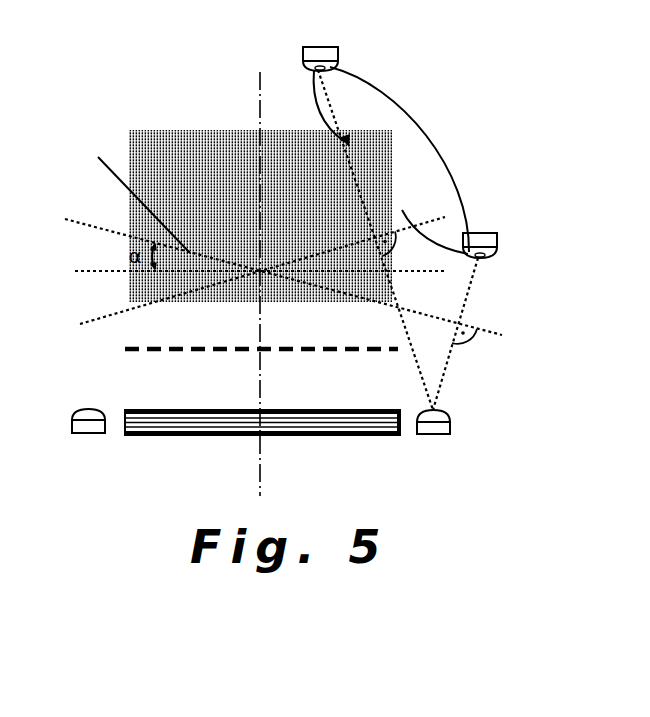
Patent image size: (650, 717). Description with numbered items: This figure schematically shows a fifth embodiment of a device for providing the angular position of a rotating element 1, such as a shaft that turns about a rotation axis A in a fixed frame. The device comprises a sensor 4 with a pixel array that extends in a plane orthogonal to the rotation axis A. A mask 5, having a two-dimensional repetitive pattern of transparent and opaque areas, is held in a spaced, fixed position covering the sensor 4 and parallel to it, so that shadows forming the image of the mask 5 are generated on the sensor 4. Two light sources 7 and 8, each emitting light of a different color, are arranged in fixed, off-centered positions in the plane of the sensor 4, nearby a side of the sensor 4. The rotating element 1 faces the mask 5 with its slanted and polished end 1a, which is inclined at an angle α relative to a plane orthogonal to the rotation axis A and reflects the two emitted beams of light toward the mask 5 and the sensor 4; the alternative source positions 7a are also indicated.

The rotating element 1 is at (178, 133).
The slanted and polished end 1a is at (128, 200).
The sensor 4 is at (312, 427).
The mask 5 is at (360, 347).
The light source 7 is at (441, 413).
The light source in alternative positions 7a is at (332, 55).
The light source 8 is at (82, 412).
The rotation axis A is at (257, 78).